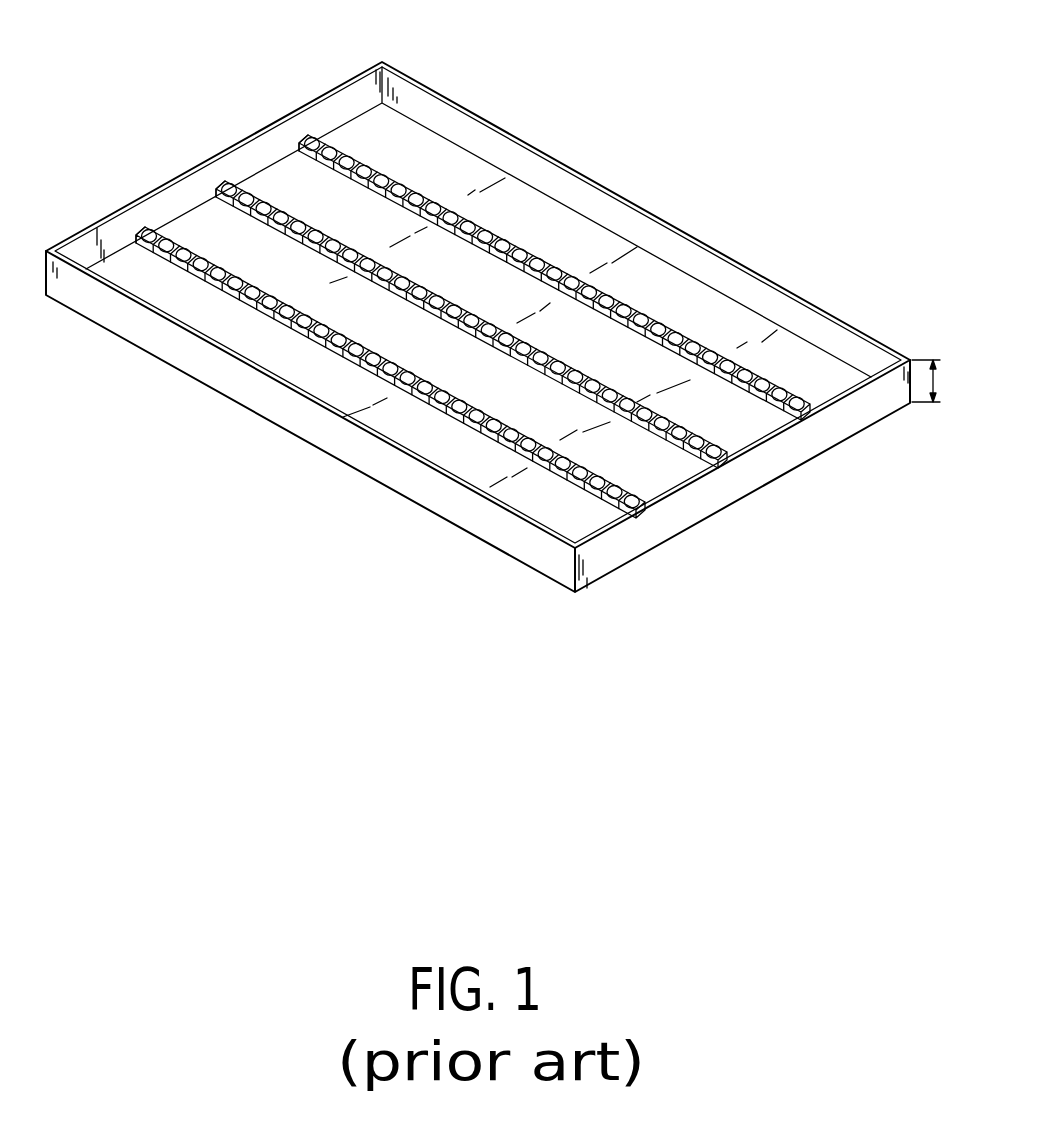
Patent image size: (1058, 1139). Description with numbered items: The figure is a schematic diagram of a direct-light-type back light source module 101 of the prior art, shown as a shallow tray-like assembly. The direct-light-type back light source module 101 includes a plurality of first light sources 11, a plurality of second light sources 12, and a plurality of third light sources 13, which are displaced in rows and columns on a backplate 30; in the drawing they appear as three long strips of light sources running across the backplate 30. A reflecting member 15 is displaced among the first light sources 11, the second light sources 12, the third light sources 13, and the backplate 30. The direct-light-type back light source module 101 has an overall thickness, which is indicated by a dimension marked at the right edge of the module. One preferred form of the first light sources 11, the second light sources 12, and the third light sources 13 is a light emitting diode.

The direct-light-type back light source module 101 is at (507, 298).
The reflecting member 15 is at (436, 107).
The backplate 30 is at (470, 523).
The first light sources 11 is at (592, 367).
The second light sources 12 is at (526, 429).
The third light sources 13 is at (670, 327).